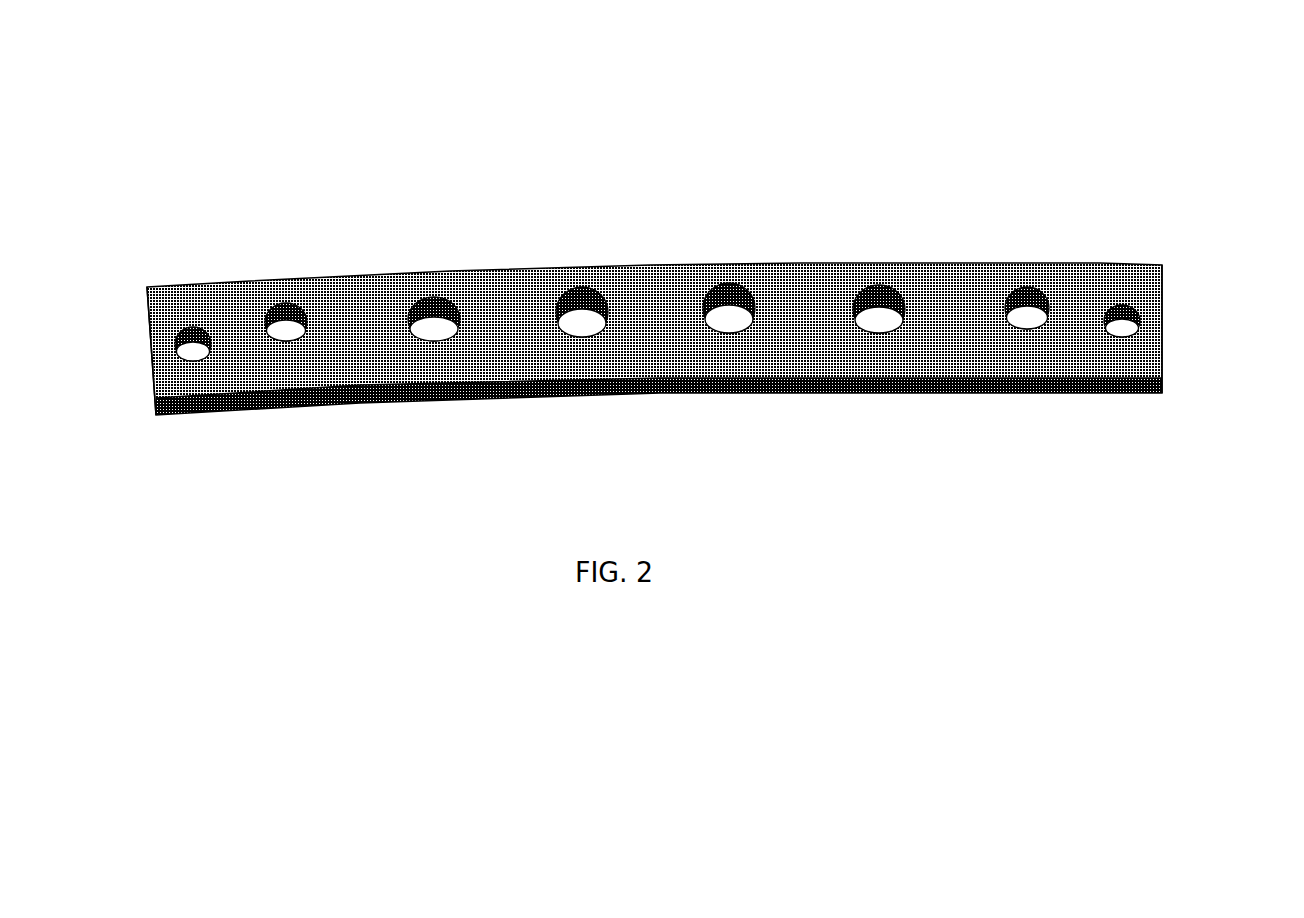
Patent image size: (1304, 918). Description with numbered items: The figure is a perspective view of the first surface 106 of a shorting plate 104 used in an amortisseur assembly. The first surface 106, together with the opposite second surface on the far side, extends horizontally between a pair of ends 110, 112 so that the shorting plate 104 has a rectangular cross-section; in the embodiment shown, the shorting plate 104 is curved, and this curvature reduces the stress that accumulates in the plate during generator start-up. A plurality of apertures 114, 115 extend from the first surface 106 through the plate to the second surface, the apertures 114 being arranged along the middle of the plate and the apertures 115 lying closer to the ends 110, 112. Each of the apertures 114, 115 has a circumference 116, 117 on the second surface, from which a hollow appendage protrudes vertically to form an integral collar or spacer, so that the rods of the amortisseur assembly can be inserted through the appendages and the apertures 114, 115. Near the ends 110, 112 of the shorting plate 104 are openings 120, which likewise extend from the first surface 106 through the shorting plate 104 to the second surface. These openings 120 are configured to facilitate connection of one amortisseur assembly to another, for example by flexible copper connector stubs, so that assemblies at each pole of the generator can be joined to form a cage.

The shorting plate 104 is at (1165, 100).
The first surface 106 is at (654, 330).
The end 110 is at (135, 335).
The end 112 is at (1163, 332).
The aperture 114 is at (435, 328).
The aperture 115 is at (287, 328).
The circumference 116 is at (435, 340).
The circumference 117 is at (285, 345).
The opening 120 is at (185, 348).